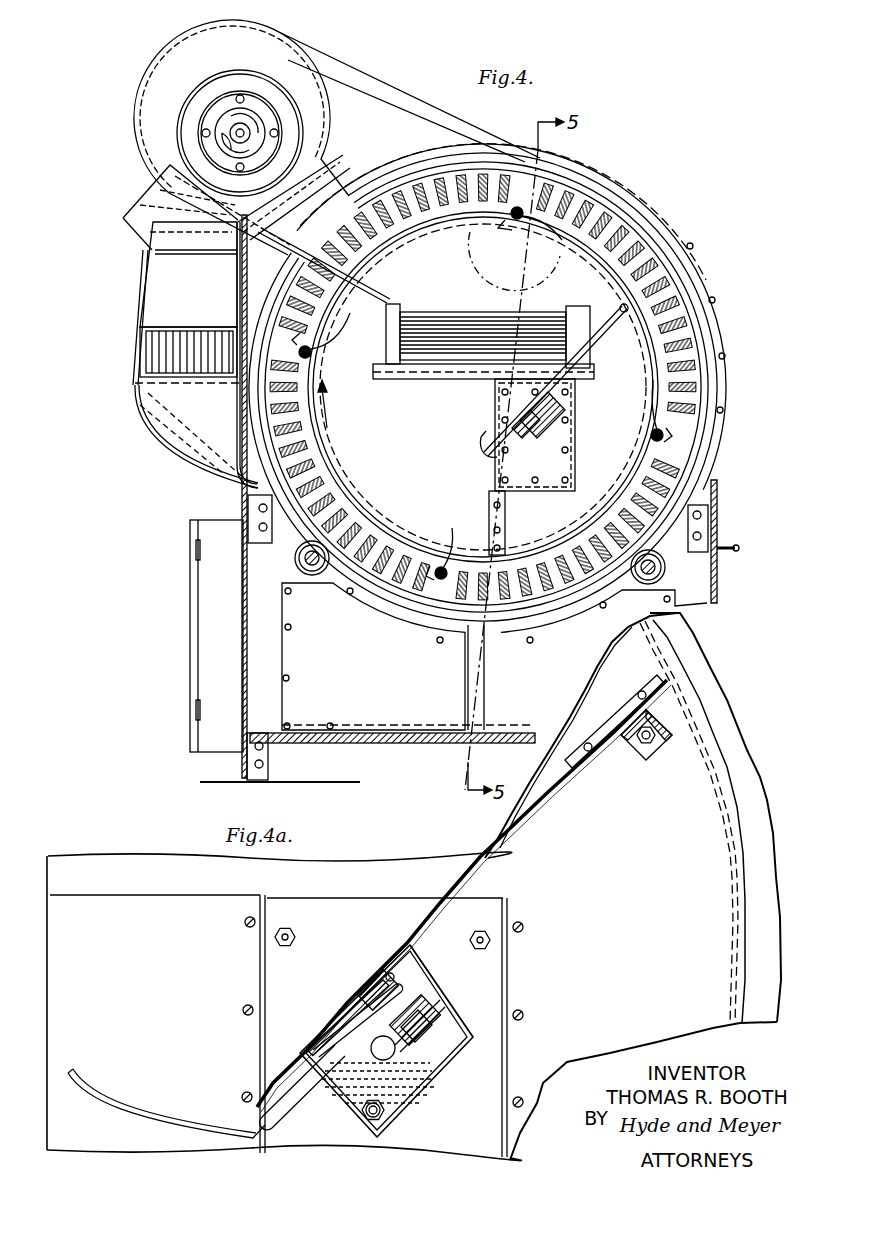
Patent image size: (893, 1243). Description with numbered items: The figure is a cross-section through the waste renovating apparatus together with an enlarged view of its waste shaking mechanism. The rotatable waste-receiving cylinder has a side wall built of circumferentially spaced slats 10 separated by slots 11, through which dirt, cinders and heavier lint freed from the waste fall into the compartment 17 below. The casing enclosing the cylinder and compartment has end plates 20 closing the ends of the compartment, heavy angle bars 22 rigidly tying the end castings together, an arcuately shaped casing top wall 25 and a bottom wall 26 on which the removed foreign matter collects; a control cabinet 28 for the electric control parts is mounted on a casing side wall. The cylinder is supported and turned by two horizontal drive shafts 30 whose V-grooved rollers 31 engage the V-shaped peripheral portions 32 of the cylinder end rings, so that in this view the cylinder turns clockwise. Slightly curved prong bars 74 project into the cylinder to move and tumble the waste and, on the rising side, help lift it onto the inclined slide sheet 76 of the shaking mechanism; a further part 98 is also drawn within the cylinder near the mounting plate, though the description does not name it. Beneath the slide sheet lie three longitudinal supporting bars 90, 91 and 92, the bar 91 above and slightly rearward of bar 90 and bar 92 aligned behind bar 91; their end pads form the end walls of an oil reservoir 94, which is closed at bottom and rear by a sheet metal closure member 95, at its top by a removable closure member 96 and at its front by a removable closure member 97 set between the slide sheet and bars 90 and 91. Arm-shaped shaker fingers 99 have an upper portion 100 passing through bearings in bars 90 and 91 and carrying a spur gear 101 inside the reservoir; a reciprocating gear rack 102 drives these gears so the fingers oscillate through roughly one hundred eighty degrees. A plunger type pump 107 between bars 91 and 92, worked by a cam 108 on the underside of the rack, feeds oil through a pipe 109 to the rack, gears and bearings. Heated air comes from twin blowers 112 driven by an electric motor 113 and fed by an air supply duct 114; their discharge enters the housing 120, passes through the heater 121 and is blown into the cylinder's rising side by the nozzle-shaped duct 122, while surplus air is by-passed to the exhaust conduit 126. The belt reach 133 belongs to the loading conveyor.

In FIG. 4, the slats 10 is at (714, 377).
In FIG. 4, the slots 11 is at (680, 448).
In FIG. 4, the compartment 17 is at (257, 651).
In FIG. 4, the end plates 20 is at (494, 656).
In FIG. 4, the angle bars 22 is at (263, 545).
In FIG. 4, the casing top wall 25 is at (607, 186).
In FIG. 4, the bottom wall 26 is at (383, 744).
In FIG. 4, the control cabinet 28 is at (190, 650).
In FIG. 4, the drive shafts 30 is at (660, 575).
In FIG. 4, the V-grooved rollers 31 is at (303, 551).
In FIG. 4, the V-shaped peripheral portions 32 is at (660, 523).
In FIG. 4, the prong bars 74 is at (330, 347).
In FIG. 4, the inclined slide sheet 76 is at (593, 348).
In FIG. 4A, the inclined slide sheet 76 is at (585, 760).
In FIG. 4, the wire 98 is at (478, 448).
In FIG. 4, the blowers 112 is at (247, 70).
In FIG. 4, the electric motor 113 is at (222, 143).
In FIG. 4, the air supply duct 114 is at (374, 78).
In FIG. 4, the housing 120 is at (185, 303).
In FIG. 4, the heater 121 is at (140, 352).
In FIG. 4, the duct 122 is at (160, 442).
In FIG. 4, the exhaust conduit 126 is at (122, 218).
In FIG. 4, the belt reach 133 is at (442, 318).
In FIG. 4A, the supporting bar 90 is at (304, 1050).
In FIG. 4A, the supporting bar 91 is at (383, 968).
In FIG. 4A, the supporting bar 92 is at (421, 1040).
In FIG. 4A, the oil reservoir 94 is at (432, 1040).
In FIG. 4A, the closure member 95 is at (424, 1095).
In FIG. 4A, the removable closure member 96 is at (460, 998).
In FIG. 4A, the removable closure member 97 is at (275, 1081).
In FIG. 4A, the shaker fingers 99 is at (153, 1120).
In FIG. 4A, the upper portion 100 is at (340, 1040).
In FIG. 4A, the spur gear 101 is at (390, 975).
In FIG. 4A, the gear rack 102 is at (458, 1030).
In FIG. 4A, the plunger type pump 107 is at (358, 1120).
In FIG. 4A, the cam 108 is at (418, 1062).
In FIG. 4A, the pipe 109 is at (360, 996).